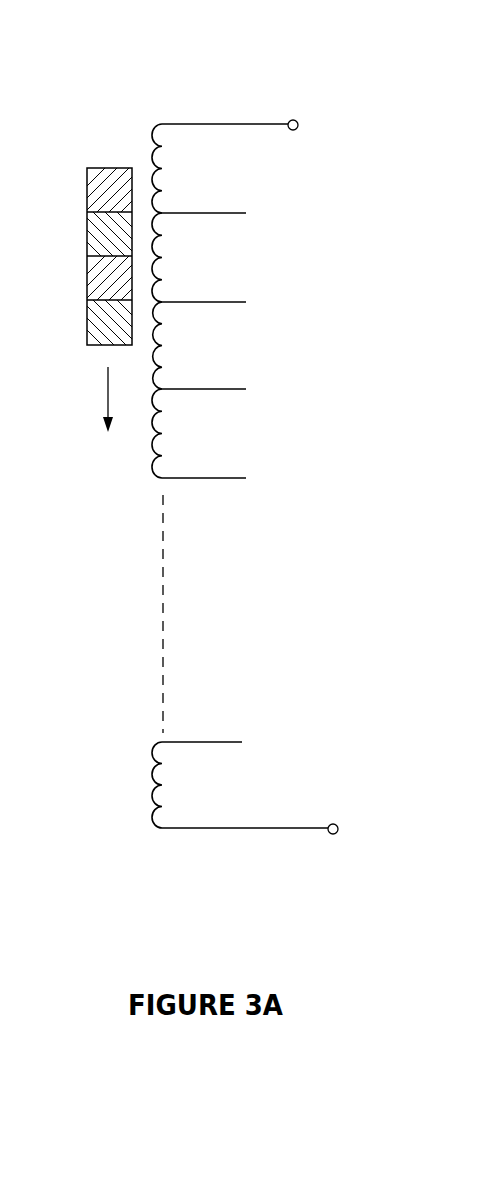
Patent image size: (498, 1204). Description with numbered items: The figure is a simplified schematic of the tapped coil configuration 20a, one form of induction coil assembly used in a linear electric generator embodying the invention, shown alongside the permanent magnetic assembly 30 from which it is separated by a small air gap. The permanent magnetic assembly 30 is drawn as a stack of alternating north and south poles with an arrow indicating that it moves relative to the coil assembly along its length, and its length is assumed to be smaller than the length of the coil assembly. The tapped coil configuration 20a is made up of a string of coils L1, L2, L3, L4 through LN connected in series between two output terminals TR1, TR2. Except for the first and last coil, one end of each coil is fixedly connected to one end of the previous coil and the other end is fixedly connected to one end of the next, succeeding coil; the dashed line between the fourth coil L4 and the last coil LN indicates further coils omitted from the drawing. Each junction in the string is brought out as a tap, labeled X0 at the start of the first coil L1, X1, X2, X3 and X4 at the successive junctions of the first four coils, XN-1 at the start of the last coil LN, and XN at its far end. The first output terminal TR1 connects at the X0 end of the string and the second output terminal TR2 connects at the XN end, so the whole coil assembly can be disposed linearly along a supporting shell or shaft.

The permanent magnetic assembly 30 is at (109, 168).
The tapped coil configuration 20a is at (145, 101).
The coil L1 is at (178, 168).
The coil L2 is at (178, 257).
The coil L3 is at (178, 345).
The coil L4 is at (178, 433).
The coil LN is at (178, 785).
The tap X0 is at (223, 126).
The tap X1 is at (222, 213).
The tap X2 is at (222, 302).
The tap X3 is at (222, 389).
The tap X4 is at (222, 478).
The tap XN-1 is at (220, 742).
The tap XN is at (220, 828).
The output terminal TR1 is at (297, 121).
The output terminal TR2 is at (337, 833).